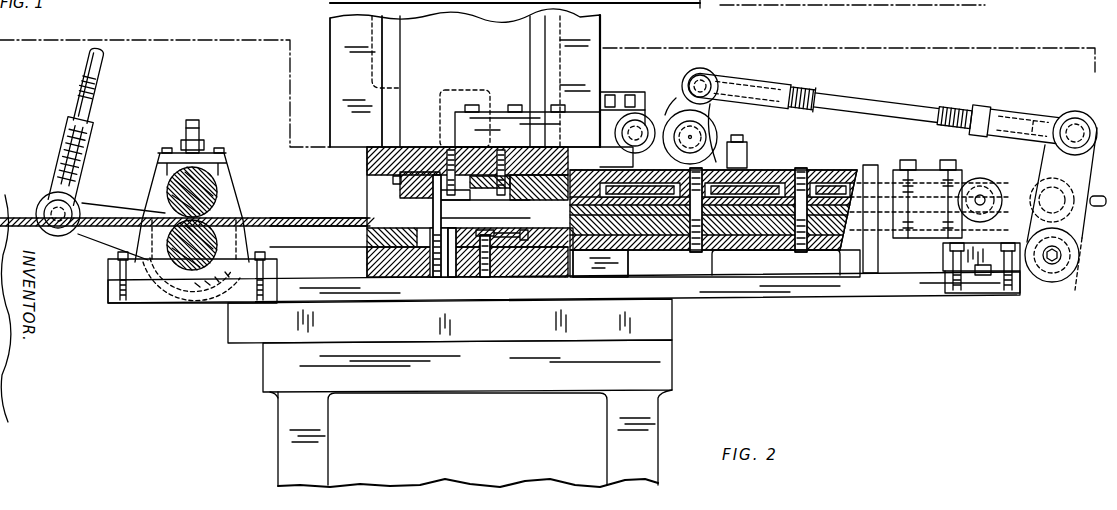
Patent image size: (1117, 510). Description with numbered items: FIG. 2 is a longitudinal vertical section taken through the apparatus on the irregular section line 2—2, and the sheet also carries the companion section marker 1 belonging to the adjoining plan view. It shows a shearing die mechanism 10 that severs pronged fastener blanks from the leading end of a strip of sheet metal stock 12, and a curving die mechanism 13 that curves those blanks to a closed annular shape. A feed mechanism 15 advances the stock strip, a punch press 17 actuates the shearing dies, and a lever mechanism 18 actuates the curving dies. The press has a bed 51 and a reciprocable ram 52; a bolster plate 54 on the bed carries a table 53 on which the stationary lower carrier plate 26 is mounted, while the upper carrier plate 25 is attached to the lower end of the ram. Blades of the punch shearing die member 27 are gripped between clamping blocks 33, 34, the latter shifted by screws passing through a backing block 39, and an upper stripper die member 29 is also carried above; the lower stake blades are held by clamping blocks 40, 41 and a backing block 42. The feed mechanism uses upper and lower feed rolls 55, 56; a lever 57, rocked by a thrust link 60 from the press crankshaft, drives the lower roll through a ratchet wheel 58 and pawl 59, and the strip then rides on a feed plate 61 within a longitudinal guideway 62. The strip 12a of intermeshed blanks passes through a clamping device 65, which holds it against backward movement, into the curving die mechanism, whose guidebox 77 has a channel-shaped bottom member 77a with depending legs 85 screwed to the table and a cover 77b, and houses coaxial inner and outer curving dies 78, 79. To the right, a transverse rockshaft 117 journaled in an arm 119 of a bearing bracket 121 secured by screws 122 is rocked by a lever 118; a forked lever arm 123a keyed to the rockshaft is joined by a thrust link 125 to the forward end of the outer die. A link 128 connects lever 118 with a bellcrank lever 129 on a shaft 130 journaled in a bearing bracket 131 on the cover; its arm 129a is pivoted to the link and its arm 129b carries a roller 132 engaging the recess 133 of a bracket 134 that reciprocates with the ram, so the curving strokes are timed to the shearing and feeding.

The section line indicator 1 is at (849, 64).
The section line 2 is at (545, 77).
The shearing die mechanism 10 is at (358, 206).
The strip of sheet metal stock 12 is at (11, 222).
The strip of fastener blanks 12a is at (610, 278).
The curving die mechanism 13 is at (822, 163).
The feed mechanism 15 is at (133, 184).
The punch press 17 is at (500, 49).
The lever mechanism 18 is at (1040, 100).
The upper carrier plate 25 is at (367, 162).
The lower carrier plate 26 is at (367, 262).
The punch shearing die member 27 is at (494, 162).
The upper stripper die member 29 is at (435, 203).
The clamping block 33 is at (517, 172).
The clamping block 34 is at (462, 160).
The backing block 39 is at (430, 150).
The clamping block 40 is at (413, 252).
The clamping block 41 is at (463, 252).
The backing block 42 is at (510, 262).
The bed 51 is at (665, 362).
The ram 52 is at (336, 66).
The table 53 is at (686, 282).
The bolster plate 54 is at (697, 306).
The upper feed roll 55 is at (210, 183).
The lower feed roll 56 is at (218, 232).
The lever 57 is at (105, 237).
The ratchet wheel 58 is at (164, 313).
The pawl 59 is at (224, 312).
The thrust link 60 is at (90, 74).
The feed plate 61 is at (283, 228).
The longitudinal guideway 62 is at (292, 228).
The clamping device 65 is at (500, 210).
The guidebox 77 is at (748, 253).
The channel-shaped bottom member 77a is at (843, 254).
The cover 77b is at (878, 183).
The inner curving die 78 is at (750, 200).
The outer curving die 79 is at (868, 180).
The depending legs 85 is at (620, 265).
The rockshaft 117 is at (1036, 303).
The lever 118 is at (1063, 166).
The arm 119 is at (1055, 285).
The bearing bracket 121 is at (993, 298).
The screws 122 is at (934, 298).
The lever arm 123a is at (981, 246).
The thrust link 125 is at (1005, 180).
The link 128 is at (916, 90).
The bellcrank lever 129 is at (708, 131).
The lever arm 129a is at (690, 74).
The lever arm 129b is at (676, 98).
The shaft 130 is at (716, 138).
The bearing bracket 131 is at (730, 165).
The roller 132 is at (630, 112).
The recess 133 is at (605, 98).
The bracket 134 is at (582, 110).